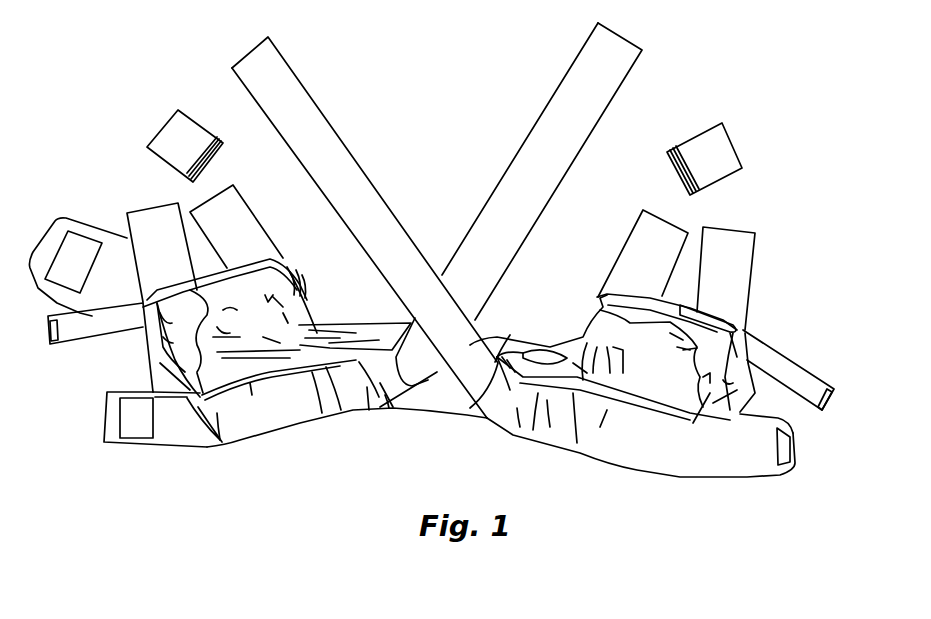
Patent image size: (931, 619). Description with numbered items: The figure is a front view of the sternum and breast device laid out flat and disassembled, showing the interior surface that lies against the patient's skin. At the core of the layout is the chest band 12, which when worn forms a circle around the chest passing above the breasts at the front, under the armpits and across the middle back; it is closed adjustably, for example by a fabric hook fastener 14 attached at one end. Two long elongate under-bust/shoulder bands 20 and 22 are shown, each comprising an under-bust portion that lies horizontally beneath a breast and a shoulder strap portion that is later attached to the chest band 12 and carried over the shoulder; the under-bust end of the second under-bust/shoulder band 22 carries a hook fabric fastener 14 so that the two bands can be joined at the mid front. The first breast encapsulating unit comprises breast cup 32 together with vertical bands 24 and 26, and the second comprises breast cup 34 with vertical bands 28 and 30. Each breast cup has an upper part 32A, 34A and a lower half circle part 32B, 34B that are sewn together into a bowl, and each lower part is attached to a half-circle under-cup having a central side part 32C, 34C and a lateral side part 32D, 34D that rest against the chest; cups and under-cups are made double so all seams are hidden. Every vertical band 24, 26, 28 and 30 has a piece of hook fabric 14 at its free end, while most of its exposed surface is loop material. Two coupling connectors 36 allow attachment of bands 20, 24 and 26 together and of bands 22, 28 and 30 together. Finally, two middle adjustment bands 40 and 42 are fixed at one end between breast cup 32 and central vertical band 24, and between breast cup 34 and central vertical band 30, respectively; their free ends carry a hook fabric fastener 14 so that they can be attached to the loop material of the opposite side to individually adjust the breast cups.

The chest band 12 is at (60, 216).
The fabric hook fastener 14 is at (79, 253).
The first under-bust/shoulder band 20 is at (288, 63).
The second under-bust/shoulder band 22 is at (582, 50).
The central vertical band 24 is at (150, 212).
The vertical band 26 is at (233, 186).
The vertical band 28 is at (632, 227).
The central vertical band 30 is at (755, 245).
The breast cup 32 is at (295, 288).
The upper part of breast cup 32A is at (157, 333).
The lower part of breast cup 32B is at (270, 350).
The central side part of under-cup 32C is at (162, 378).
The lateral side part of under-cup 32D is at (315, 327).
The breast cup 34 is at (585, 330).
The upper part of breast cup 34A is at (713, 333).
The lower part of breast cup 34B is at (647, 383).
The central side part of under-cup 34C is at (780, 418).
The lateral side part of under-cup 34D is at (565, 347).
The coupling connector 36 is at (162, 127).
The middle adjustment band 40 is at (90, 343).
The middle adjustment band 42 is at (787, 353).